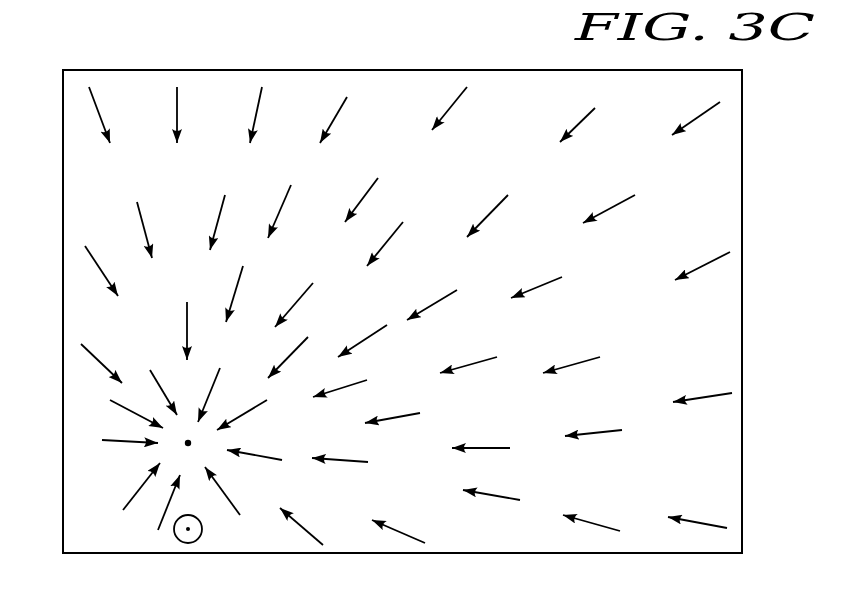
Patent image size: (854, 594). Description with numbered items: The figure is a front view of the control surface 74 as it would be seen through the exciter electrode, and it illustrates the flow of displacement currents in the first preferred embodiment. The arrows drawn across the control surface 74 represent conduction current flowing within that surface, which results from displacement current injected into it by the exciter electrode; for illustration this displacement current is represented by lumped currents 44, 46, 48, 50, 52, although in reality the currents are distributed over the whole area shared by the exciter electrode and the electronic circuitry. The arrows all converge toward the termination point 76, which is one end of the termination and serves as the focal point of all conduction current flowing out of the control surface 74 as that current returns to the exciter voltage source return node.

The lumped current 44 is at (191, 115).
The lumped current 46 is at (358, 199).
The lumped current 48 is at (536, 281).
The lumped current 50 is at (392, 406).
The lumped current 52 is at (697, 511).
The control surface 74 is at (355, 69).
The termination point 76 is at (184, 446).